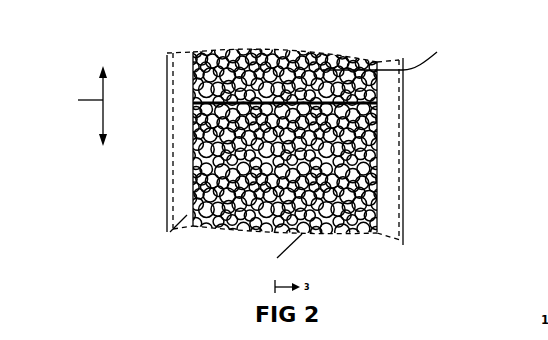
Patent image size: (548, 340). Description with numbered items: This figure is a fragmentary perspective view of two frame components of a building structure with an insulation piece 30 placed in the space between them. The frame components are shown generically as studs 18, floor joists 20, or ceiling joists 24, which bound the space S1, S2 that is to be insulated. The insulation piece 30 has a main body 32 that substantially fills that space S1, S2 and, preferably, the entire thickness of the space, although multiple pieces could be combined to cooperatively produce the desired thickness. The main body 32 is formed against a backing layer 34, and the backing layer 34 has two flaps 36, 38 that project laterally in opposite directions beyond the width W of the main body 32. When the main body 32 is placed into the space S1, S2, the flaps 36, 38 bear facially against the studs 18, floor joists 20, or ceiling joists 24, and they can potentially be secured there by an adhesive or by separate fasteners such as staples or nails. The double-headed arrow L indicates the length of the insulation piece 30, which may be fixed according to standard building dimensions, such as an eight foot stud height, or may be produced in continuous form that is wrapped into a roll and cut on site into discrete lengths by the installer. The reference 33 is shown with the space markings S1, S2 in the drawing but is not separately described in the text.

The studs 18 is at (276, 193).
The floor joists 20 is at (276, 193).
The ceiling joists 24 is at (405, 135).
The insulation piece 30 is at (296, 52).
The main body 32 is at (263, 62).
The surface 33 is at (288, 253).
The backing layer 34 is at (167, 177).
The flap 36 is at (392, 173).
The flap 38 is at (182, 90).
The space S1 is at (288, 253).
The space S2 is at (288, 253).
The width of the main body W is at (386, 51).
The length of the insulation piece L is at (85, 106).